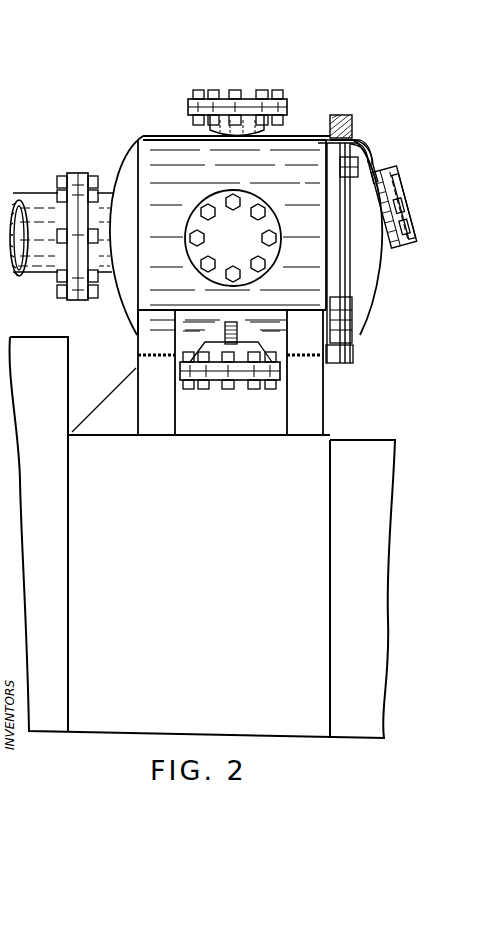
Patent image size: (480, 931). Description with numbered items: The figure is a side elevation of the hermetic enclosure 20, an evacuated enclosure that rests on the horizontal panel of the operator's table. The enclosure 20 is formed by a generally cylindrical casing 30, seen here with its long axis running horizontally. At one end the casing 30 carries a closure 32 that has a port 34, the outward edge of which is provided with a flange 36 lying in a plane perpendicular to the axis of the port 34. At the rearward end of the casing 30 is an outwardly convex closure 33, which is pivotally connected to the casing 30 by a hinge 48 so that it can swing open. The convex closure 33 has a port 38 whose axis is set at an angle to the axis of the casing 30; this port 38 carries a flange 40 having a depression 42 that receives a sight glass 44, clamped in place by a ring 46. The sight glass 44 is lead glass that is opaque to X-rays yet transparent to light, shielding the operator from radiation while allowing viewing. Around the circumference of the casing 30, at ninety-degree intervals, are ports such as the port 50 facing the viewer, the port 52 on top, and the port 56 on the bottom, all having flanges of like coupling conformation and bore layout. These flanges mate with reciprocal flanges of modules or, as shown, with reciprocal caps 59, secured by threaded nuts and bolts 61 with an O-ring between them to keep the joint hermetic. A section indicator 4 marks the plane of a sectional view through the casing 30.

The section line 4- 4 is at (240, 86).
The hermetic enclosure 20 is at (124, 139).
The cylindrical casing 30 is at (181, 140).
The closure 32 is at (127, 172).
The outwardly convex closure 33 is at (378, 273).
The port 34 is at (100, 278).
The flange 36 is at (78, 300).
The port 38 is at (378, 183).
The flange 40 is at (391, 172).
The depression 42 is at (412, 218).
The sight glass 44 is at (407, 192).
The ring 46 is at (410, 207).
The hinge 48 is at (345, 262).
The port 50 is at (243, 246).
The port 52 is at (297, 101).
The port 56 is at (244, 384).
The reciprocal cap 59 is at (73, 174).
The threaded nuts and bolts 61 is at (212, 92).